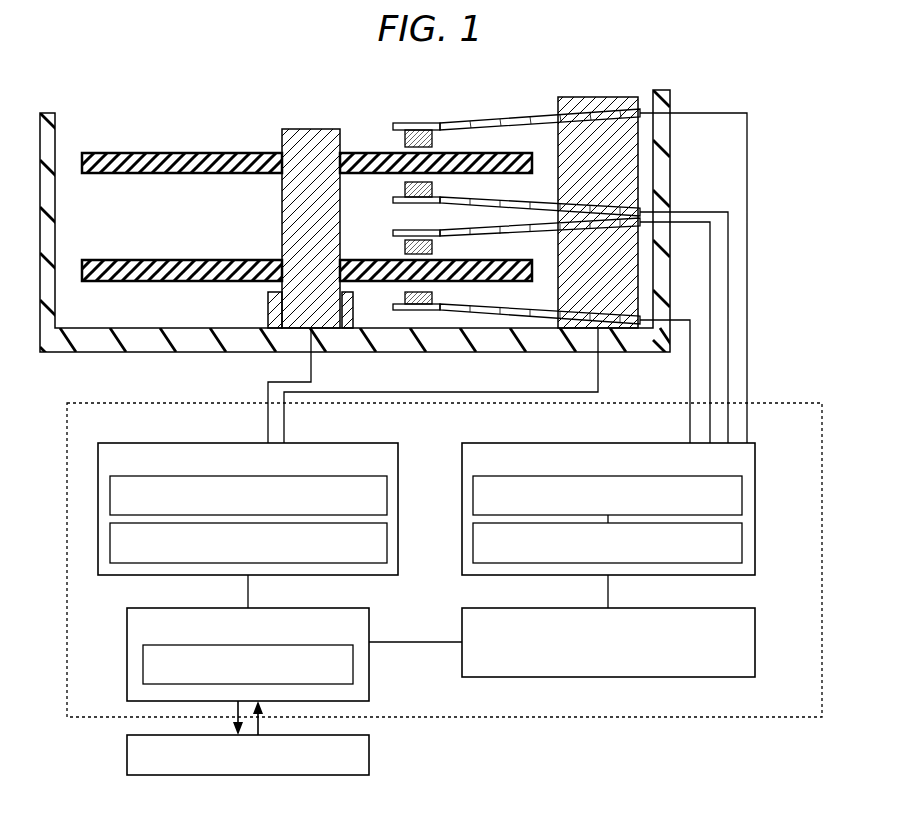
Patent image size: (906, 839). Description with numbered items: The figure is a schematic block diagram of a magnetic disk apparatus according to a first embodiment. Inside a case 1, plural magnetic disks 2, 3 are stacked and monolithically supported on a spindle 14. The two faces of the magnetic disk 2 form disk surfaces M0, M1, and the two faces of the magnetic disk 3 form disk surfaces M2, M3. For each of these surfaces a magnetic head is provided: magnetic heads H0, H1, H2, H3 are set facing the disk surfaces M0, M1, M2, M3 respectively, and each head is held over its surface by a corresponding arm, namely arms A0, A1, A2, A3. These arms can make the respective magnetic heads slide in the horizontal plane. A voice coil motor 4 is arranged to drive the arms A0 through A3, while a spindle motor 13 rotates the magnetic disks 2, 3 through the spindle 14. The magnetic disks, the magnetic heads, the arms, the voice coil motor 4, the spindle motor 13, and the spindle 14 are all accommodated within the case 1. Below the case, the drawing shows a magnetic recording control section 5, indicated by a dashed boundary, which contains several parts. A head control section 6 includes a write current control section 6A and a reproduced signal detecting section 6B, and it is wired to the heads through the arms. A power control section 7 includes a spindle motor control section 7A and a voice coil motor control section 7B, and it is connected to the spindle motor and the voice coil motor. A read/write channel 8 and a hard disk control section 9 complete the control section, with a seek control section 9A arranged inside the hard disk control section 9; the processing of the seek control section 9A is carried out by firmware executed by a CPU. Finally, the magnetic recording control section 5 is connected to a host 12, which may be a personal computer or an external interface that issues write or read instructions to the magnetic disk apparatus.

The case 1 is at (52, 112).
The magnetic disk 2 is at (240, 152).
The magnetic disk 3 is at (240, 259).
The voice coil motor 4 is at (614, 96).
The magnetic recording control section 5 is at (192, 402).
The head control section 6 is at (498, 442).
The write current control section 6A is at (743, 490).
The reproduced signal detecting section 6B is at (743, 537).
The power control section 7 is at (188, 442).
The spindle motor control section 7A is at (388, 490).
The voice coil motor control section 7B is at (388, 537).
The read/write channel 8 is at (695, 607).
The hard disk control section 9 is at (165, 607).
The seek control section 9A is at (354, 663).
The host 12 is at (370, 755).
The spindle motor 13 is at (267, 308).
The spindle 14 is at (318, 128).
The disk surface M0 is at (183, 152).
The disk surface M1 is at (183, 175).
The disk surface M2 is at (120, 259).
The disk surface M3 is at (118, 283).
The arm A0 is at (500, 115).
The arm A1 is at (512, 206).
The arm A2 is at (512, 231).
The arm A3 is at (512, 313).
The magnetic head H0 is at (434, 138).
The magnetic head H1 is at (434, 188).
The magnetic head H2 is at (434, 248).
The magnetic head H3 is at (434, 297).